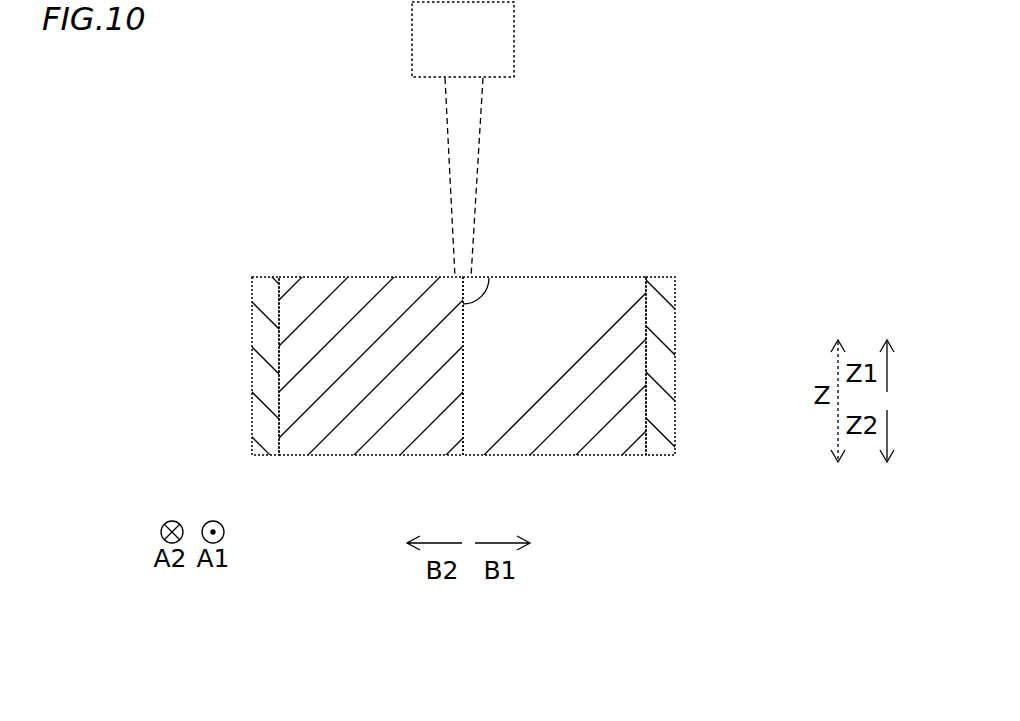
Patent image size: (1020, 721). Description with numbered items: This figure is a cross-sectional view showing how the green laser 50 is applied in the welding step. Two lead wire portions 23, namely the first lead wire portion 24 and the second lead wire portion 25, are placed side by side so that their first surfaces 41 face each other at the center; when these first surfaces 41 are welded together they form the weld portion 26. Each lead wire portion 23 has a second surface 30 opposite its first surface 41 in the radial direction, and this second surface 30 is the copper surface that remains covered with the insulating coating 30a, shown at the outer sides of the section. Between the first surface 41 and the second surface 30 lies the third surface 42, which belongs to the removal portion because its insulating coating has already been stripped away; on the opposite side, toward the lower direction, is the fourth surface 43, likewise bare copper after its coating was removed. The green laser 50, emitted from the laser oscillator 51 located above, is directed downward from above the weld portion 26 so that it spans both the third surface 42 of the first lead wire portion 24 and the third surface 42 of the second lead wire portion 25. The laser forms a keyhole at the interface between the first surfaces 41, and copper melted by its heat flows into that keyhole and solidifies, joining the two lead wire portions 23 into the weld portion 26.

The laser oscillator 51 is at (517, 40).
The green laser 50 is at (482, 147).
The lead wire portion 23 is at (460, 370).
The first lead wire portion 24 is at (675, 335).
The second lead wire portion 25 is at (252, 358).
The second surface 30 is at (278, 331).
The insulating coating 30a is at (266, 417).
The weld portion 26 is at (486, 300).
The first surface 41 is at (491, 280).
The third surface 42 is at (412, 277).
The fourth surface 43 is at (341, 458).